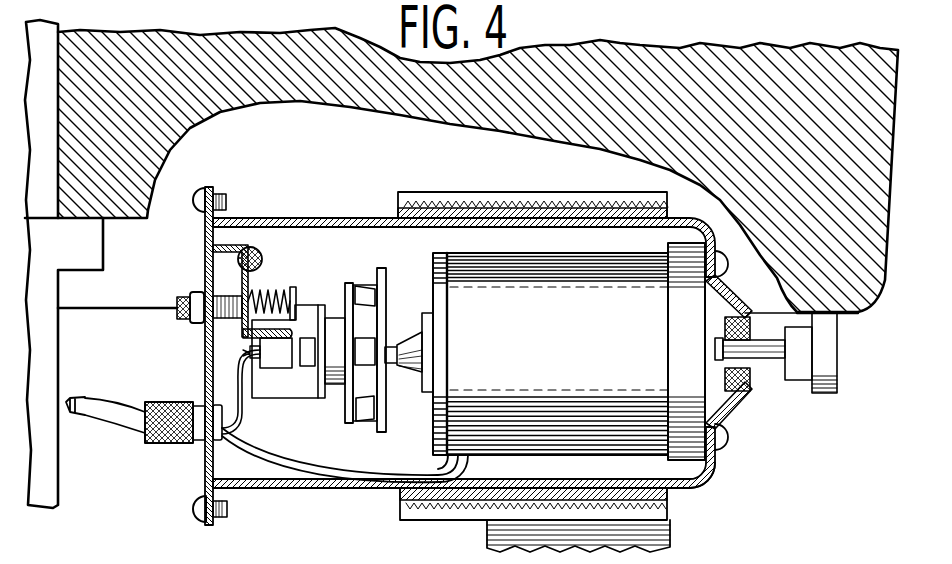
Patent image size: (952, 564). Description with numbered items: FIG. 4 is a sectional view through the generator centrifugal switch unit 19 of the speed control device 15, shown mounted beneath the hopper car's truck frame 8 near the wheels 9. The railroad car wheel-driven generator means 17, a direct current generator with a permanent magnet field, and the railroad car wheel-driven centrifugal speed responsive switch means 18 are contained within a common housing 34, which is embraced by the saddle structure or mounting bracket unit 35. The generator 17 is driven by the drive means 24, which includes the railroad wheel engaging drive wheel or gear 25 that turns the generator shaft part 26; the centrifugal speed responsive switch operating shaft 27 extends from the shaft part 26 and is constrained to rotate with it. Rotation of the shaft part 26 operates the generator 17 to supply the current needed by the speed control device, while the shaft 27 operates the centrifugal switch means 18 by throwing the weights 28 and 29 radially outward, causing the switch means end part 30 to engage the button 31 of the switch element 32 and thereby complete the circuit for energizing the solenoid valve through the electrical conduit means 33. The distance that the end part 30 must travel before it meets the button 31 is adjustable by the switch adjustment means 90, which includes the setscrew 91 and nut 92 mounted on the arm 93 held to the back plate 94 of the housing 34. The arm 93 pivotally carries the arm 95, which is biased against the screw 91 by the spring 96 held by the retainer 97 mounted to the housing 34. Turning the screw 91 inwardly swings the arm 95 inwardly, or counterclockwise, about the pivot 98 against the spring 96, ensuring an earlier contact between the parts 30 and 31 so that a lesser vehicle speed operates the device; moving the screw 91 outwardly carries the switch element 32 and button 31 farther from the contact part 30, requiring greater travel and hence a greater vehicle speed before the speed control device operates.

The truck frame 8 is at (548, 138).
The wheels 9 is at (855, 316).
The speed control device 15 is at (705, 482).
The wheel-driven generator means 17 is at (567, 251).
The centrifugal speed responsive switch means 18 is at (300, 300).
The generator centrifugal switch unit 19 is at (341, 219).
The drive means 24 is at (774, 378).
The drive wheel or gear 25 is at (822, 394).
The generator shaft part 26 is at (763, 372).
The centrifugal speed responsive switch operating shaft 27 is at (392, 342).
The weight 28 is at (386, 268).
The weight 29 is at (366, 422).
The switch means end part 30 is at (311, 362).
The button 31 is at (278, 372).
The switch element 32 is at (233, 350).
The electrical conduit means 33 is at (110, 416).
The common housing 34 is at (288, 490).
The mounting bracket unit 35 is at (452, 192).
The switch adjustment means 90 is at (190, 290).
The setscrew 91 is at (178, 300).
The nut 92 is at (200, 322).
The arm 93 is at (233, 245).
The back plate 94 is at (203, 494).
The arm 95 is at (260, 270).
The spring 96 is at (268, 291).
The retainer 97 is at (364, 289).
The pivot 98 is at (253, 248).